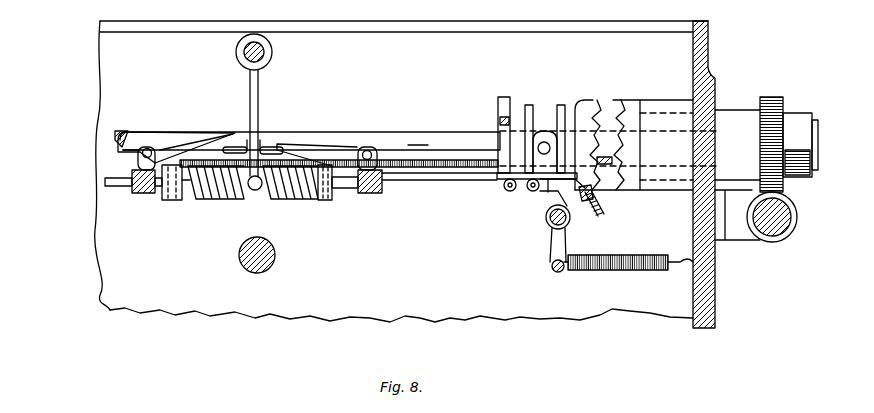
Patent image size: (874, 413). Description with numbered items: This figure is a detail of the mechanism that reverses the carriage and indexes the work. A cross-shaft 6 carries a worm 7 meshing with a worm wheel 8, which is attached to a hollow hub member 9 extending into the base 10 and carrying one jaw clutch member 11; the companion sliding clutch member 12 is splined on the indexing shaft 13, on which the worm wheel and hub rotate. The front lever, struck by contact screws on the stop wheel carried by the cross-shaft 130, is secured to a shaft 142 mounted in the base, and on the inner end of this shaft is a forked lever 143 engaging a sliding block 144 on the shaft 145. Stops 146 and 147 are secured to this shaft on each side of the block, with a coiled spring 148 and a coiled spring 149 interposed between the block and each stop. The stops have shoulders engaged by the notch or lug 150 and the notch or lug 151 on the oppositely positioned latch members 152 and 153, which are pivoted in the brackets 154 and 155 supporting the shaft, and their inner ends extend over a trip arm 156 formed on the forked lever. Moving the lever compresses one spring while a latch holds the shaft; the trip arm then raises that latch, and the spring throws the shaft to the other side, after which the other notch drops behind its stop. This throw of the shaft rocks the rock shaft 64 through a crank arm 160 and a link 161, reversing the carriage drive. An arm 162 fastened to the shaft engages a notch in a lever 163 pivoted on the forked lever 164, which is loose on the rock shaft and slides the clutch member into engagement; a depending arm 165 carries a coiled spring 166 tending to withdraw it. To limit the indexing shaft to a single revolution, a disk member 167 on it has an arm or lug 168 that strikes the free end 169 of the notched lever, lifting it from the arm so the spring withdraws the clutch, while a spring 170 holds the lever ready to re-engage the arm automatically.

The cross-shaft 6 is at (790, 228).
The worm 7 is at (792, 212).
The worm wheel 8 is at (785, 186).
The hollow hub member 9 is at (742, 115).
The base 10 is at (709, 52).
The jaw clutch member 11 is at (623, 101).
The sliding clutch member 12 is at (580, 134).
The indexing shaft 13 is at (606, 130).
The rock shaft 64 is at (569, 221).
The cross-shaft 130 is at (276, 253).
The shaft 142 is at (272, 50).
The forked lever 143 is at (262, 72).
The sliding block 144 is at (250, 192).
The shaft 145 is at (118, 188).
The stop 146 is at (326, 200).
The stop 147 is at (172, 200).
The coiled spring 148 is at (225, 196).
The coiled spring 149 is at (278, 198).
The notch or lug 150 is at (347, 141).
The notch or lug 151 is at (173, 147).
The latch member 152 is at (297, 145).
The latch member 153 is at (186, 147).
The bracket 154 is at (148, 193).
The bracket 155 is at (380, 187).
The trip arm 156 is at (267, 145).
The crank arm 160 is at (548, 192).
The link 161 is at (505, 195).
The arm 162 is at (547, 185).
The notched lever 163 is at (590, 192).
The forked lever 164 is at (542, 133).
The depending arm 165 is at (552, 262).
The coiled spring 166 is at (612, 267).
The disk member 167 is at (500, 100).
The arm or lug 168 is at (500, 121).
The free end 169 is at (500, 193).
The spring 170 is at (600, 206).